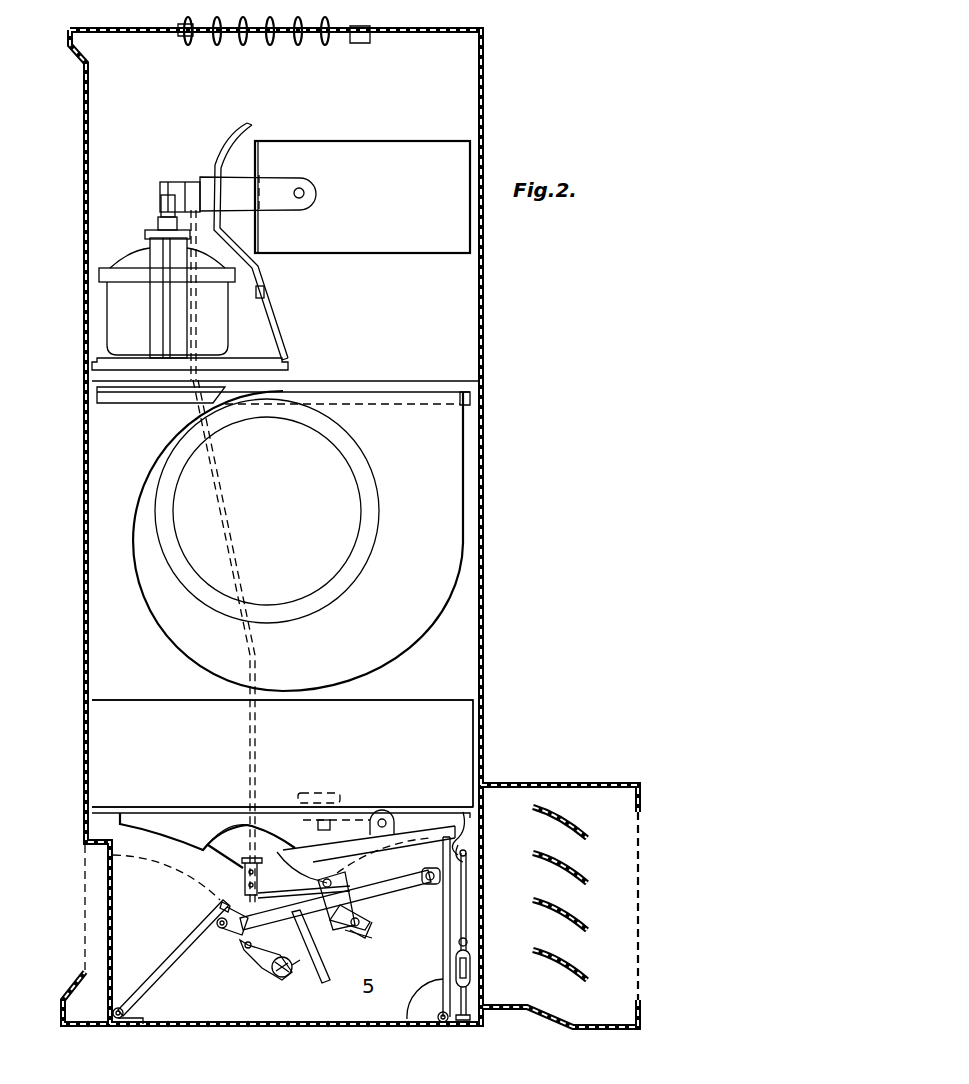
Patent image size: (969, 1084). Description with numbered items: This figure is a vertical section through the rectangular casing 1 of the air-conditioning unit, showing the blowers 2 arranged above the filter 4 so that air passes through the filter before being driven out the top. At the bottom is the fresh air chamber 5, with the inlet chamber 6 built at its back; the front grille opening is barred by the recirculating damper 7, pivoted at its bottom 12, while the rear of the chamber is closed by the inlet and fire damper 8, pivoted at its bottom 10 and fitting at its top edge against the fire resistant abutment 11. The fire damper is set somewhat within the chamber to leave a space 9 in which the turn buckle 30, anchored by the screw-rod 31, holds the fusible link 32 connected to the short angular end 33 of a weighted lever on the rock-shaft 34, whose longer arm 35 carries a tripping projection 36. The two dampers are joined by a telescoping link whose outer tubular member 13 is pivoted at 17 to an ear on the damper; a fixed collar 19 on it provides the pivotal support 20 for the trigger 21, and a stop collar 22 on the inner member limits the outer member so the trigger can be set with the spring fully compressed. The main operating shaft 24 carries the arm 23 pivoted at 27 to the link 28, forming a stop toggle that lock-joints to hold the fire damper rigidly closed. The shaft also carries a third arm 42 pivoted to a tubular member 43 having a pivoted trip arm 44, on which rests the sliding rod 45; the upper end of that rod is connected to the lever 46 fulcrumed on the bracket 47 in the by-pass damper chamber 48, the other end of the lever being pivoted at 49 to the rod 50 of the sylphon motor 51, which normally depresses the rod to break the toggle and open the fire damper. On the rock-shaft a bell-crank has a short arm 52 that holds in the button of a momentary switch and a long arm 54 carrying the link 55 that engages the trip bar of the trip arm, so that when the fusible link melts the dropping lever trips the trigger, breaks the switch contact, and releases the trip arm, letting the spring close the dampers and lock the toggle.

The casing 1 is at (483, 482).
The blowers 2 is at (420, 620).
The filter 4 is at (110, 744).
The fresh air chamber 5 is at (358, 934).
The inlet chamber 6 is at (594, 805).
The recirculating damper 7 is at (180, 948).
The inlet and fire damper 8 is at (418, 1022).
The space 9 is at (470, 940).
The bottom pivot of damper 8 10 is at (445, 1025).
The fire resistant abutment 11 is at (470, 860).
The bottom pivot of damper 7 12 is at (118, 1030).
The outer tubular member 13 is at (318, 960).
The pivotal connection 17 is at (222, 935).
The fixed collar 19 is at (338, 915).
The pivotal support 20 is at (327, 879).
The trigger 21 is at (316, 848).
The fixed stop collar 22 is at (222, 907).
The arm 23 is at (305, 975).
The main or operating shaft 24 is at (282, 978).
The pivot 27 is at (372, 930).
The link 28 is at (393, 898).
The turn buckle 30 is at (472, 970).
The screw-rod 31 is at (470, 997).
The fusible link 32 is at (468, 903).
The short angular end 33 is at (464, 840).
The rock-shaft 34 is at (382, 818).
The weighted lever arm 35 is at (154, 815).
The tripping projection 36 is at (287, 832).
The third arm 42 is at (260, 962).
The tubular member 43 is at (240, 893).
The trip arm 44 is at (227, 846).
The rod 45 is at (222, 517).
The lever 46 is at (175, 182).
The bracket 47 is at (150, 250).
The by-pass damper chamber 48 is at (115, 180).
The pivot 49 is at (160, 208).
The rod 50 is at (207, 210).
The sylphon motor or pump 51 is at (118, 313).
The short arm of bell-crank lever 52 is at (350, 803).
The long arm of bell-crank 54 is at (377, 857).
The link 55 is at (300, 892).